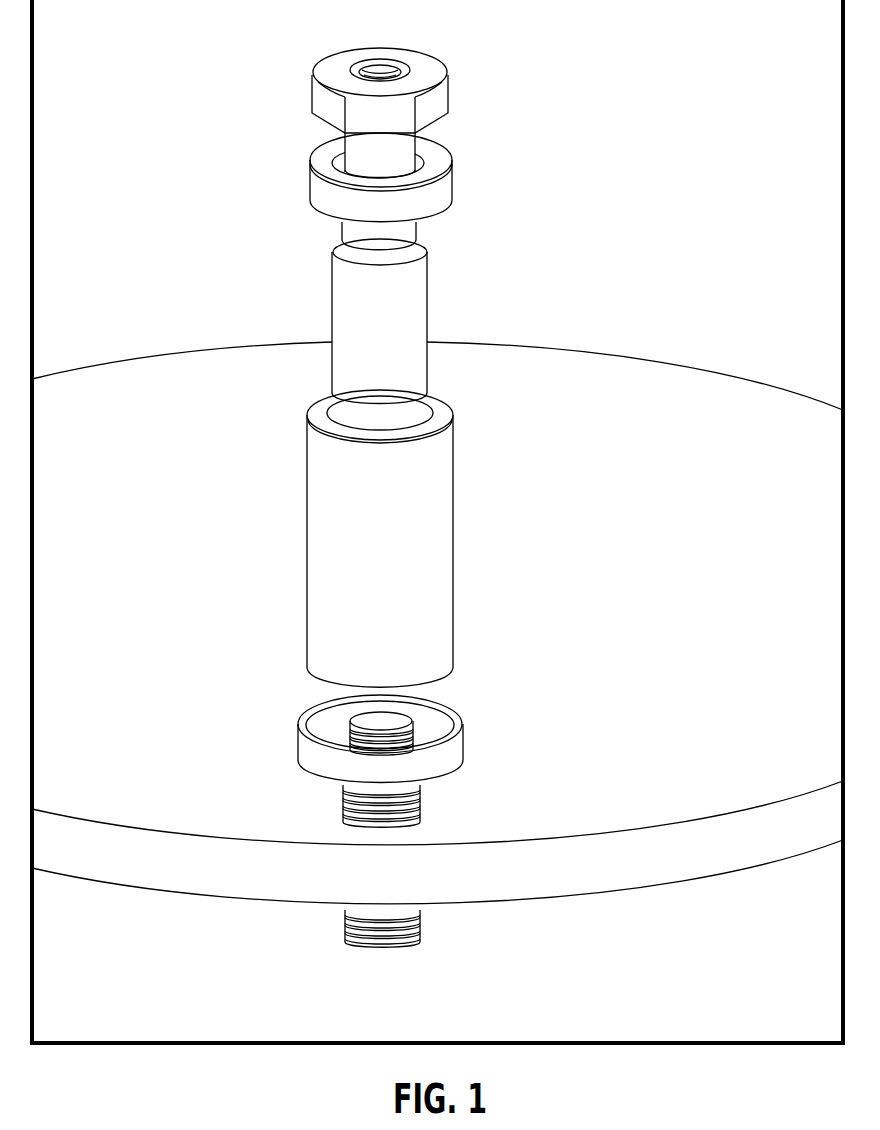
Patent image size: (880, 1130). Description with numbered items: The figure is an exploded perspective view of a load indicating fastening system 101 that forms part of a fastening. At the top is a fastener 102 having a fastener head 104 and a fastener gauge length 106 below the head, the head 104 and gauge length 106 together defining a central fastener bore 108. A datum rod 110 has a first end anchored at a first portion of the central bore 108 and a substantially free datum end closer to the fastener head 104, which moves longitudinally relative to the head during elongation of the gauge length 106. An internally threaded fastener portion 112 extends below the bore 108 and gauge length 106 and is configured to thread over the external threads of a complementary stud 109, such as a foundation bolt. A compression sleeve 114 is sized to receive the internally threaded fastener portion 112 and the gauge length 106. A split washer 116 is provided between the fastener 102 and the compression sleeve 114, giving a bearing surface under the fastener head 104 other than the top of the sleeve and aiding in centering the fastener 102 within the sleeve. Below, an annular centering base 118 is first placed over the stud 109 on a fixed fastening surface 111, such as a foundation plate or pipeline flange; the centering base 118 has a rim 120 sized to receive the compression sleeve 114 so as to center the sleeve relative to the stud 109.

The load indicating fastening system 101 is at (218, 88).
The fastener 102 is at (338, 61).
The fastener head 104 is at (425, 78).
The fastener gauge length 106 is at (403, 160).
The central fastener bore 108 is at (384, 61).
The datum rod 110 is at (390, 70).
The stud 109 is at (420, 795).
The fixed fastening surface 111 is at (185, 566).
The internally threaded fastener portion 112 is at (417, 315).
The compression sleeve 114 is at (440, 592).
The split washer 116 is at (442, 193).
The annular centering base 118 is at (452, 757).
The rim 120 is at (450, 705).